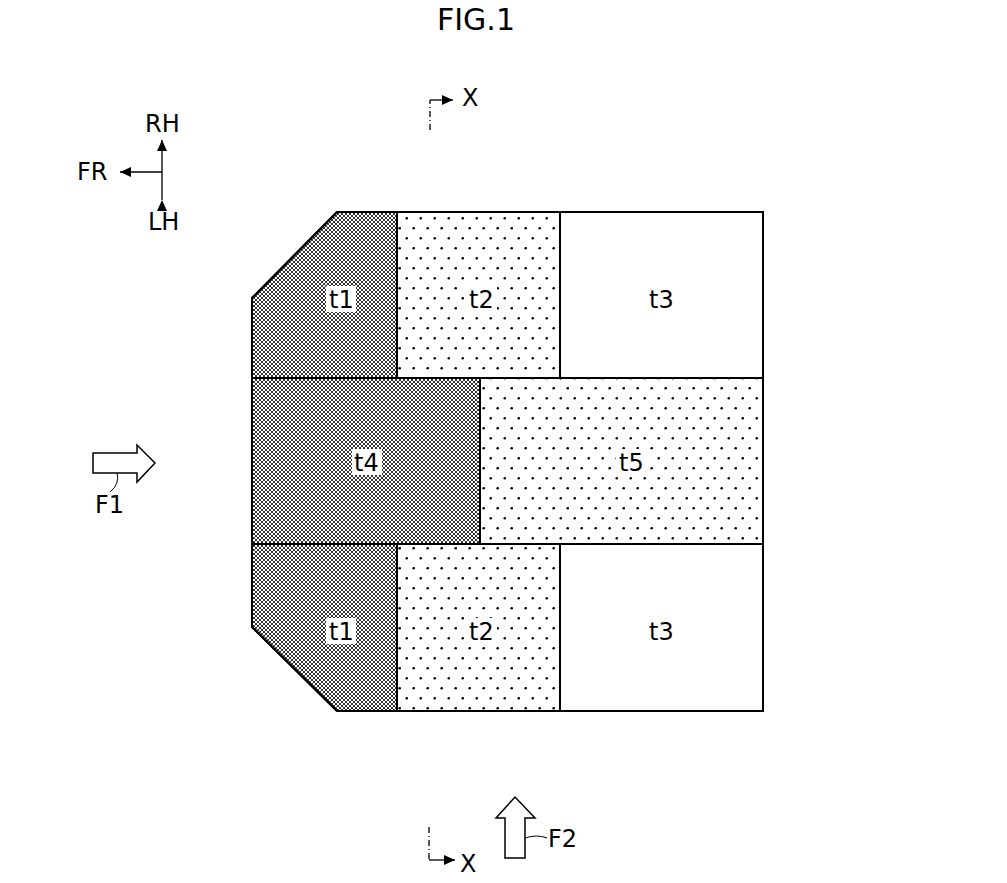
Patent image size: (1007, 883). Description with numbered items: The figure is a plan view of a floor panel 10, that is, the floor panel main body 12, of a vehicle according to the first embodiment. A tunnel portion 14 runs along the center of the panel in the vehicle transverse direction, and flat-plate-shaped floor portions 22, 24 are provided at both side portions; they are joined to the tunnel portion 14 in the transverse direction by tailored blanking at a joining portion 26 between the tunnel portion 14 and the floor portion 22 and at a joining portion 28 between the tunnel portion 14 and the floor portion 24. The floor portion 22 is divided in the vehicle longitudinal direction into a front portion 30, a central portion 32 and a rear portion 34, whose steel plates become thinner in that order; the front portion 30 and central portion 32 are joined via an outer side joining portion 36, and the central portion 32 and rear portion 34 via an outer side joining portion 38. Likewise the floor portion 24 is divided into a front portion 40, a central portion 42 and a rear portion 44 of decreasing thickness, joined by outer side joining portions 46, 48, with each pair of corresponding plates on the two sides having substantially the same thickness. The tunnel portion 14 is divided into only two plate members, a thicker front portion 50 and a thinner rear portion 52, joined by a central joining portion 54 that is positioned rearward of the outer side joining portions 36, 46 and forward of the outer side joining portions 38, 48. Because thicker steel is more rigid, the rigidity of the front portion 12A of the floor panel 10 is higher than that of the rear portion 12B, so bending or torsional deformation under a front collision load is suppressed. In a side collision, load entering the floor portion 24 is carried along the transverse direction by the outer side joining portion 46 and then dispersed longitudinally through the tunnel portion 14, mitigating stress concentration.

The floor panel 10 is at (770, 140).
The floor panel main body 12 is at (676, 208).
The front portion 12A is at (338, 210).
The rear portion 12B is at (627, 228).
The tunnel portion 14 is at (250, 503).
The floor portion 22 is at (250, 343).
The floor portion 24 is at (250, 588).
The joining portion 26 is at (698, 378).
The joining portion 28 is at (705, 544).
The front portion 30 is at (297, 253).
The central portion 32 is at (476, 214).
The rear portion 34 is at (738, 218).
The outer side joining portion 36 is at (383, 211).
The outer side joining portion 38 is at (552, 212).
The front portion 40 is at (305, 679).
The central portion 42 is at (473, 712).
The rear portion 44 is at (657, 712).
The outer side joining portion 46 is at (380, 712).
The outer side joining portion 48 is at (543, 712).
The front portion 50 is at (252, 428).
The rear portion 52 is at (745, 418).
The central joining portion 54 is at (487, 407).